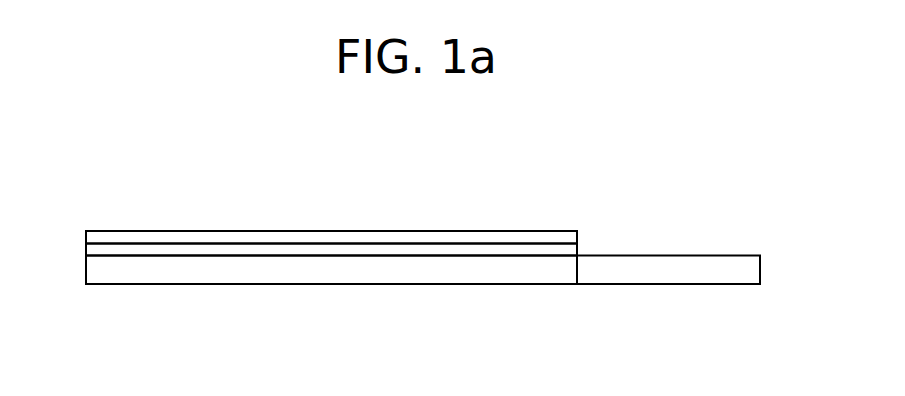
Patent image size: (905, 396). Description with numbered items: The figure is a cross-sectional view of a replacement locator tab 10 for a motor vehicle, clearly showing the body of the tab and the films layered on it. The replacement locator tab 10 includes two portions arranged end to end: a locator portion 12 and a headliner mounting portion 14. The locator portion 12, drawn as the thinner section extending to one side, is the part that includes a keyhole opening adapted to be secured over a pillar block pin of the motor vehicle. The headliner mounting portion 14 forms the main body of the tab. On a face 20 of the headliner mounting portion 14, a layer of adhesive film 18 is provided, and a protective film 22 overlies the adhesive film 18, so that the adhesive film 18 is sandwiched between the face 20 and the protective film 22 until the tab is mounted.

The replacement locator tab 10 is at (603, 192).
The locator portion 12 is at (640, 265).
The headliner mounting portion 14 is at (187, 272).
The adhesive film 18 is at (182, 249).
The face 20 is at (313, 255).
The protective film 22 is at (140, 230).